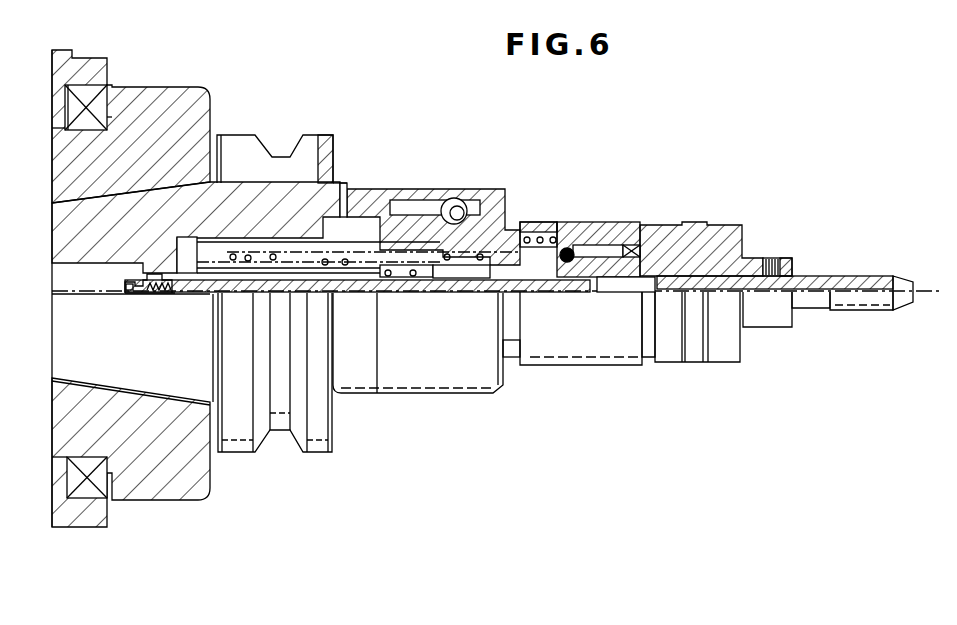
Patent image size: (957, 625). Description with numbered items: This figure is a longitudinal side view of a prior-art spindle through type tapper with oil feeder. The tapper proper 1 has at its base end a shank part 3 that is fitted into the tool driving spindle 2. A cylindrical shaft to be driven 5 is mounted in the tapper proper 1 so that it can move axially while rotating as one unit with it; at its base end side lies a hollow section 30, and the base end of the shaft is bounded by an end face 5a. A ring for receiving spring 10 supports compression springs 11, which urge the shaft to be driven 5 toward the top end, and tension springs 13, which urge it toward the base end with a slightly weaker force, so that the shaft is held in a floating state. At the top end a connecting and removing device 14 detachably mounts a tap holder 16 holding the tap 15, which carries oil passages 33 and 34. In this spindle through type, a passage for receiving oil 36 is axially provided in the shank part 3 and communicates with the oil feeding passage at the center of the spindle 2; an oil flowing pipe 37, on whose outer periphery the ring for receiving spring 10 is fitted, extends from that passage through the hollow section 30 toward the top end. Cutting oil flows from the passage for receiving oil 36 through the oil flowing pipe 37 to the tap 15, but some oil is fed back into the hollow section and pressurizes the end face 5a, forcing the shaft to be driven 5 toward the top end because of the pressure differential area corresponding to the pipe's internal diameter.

The tapper proper 1 is at (343, 182).
The tool driving spindle 2 is at (172, 95).
The shank part 3 is at (170, 200).
The shaft to be driven 5 is at (392, 237).
The end face 5a is at (216, 254).
The ring for receiving spring 10 is at (458, 265).
The compression springs 11 is at (388, 278).
The tension springs 13 is at (448, 268).
The connecting and removing device 14 is at (623, 233).
The tap 15 is at (860, 249).
The tap holder 16 is at (717, 245).
The hollow section 30 is at (403, 260).
The oil passage 33 is at (588, 282).
The oil passage 34 is at (865, 291).
The passage for receiving oil 36 is at (85, 264).
The oil flowing pipe 37 is at (480, 282).